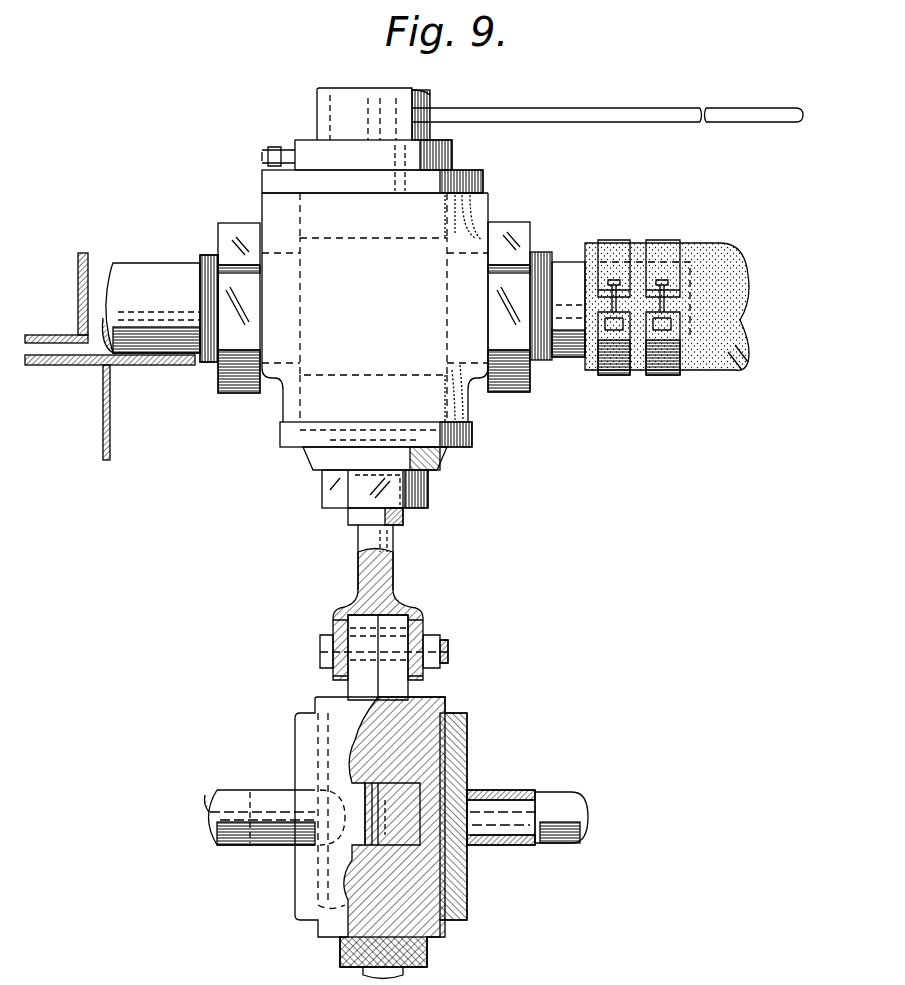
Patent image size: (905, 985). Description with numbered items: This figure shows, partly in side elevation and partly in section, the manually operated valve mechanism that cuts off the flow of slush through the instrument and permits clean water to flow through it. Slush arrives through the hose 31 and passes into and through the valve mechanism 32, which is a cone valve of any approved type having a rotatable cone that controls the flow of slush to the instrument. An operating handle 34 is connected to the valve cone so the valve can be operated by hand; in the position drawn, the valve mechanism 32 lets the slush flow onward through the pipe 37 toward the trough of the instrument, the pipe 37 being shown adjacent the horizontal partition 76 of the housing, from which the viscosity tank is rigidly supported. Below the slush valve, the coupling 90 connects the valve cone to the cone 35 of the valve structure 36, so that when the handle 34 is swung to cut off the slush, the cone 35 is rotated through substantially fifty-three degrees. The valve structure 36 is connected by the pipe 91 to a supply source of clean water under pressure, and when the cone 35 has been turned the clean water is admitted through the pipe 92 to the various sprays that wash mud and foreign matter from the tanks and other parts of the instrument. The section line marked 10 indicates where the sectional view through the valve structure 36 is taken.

The operating handle 34 is at (583, 122).
The pipe 37 is at (146, 272).
The horizontal partition 76 is at (160, 368).
The valve mechanism 32 is at (440, 388).
The hose 31 is at (703, 370).
The cone 35 is at (440, 697).
The coupling 90 is at (390, 572).
The valve structure 36 is at (478, 744).
The pipe 91 is at (557, 795).
The pipe 92 is at (230, 838).
The section line 10- 10 is at (160, 810).